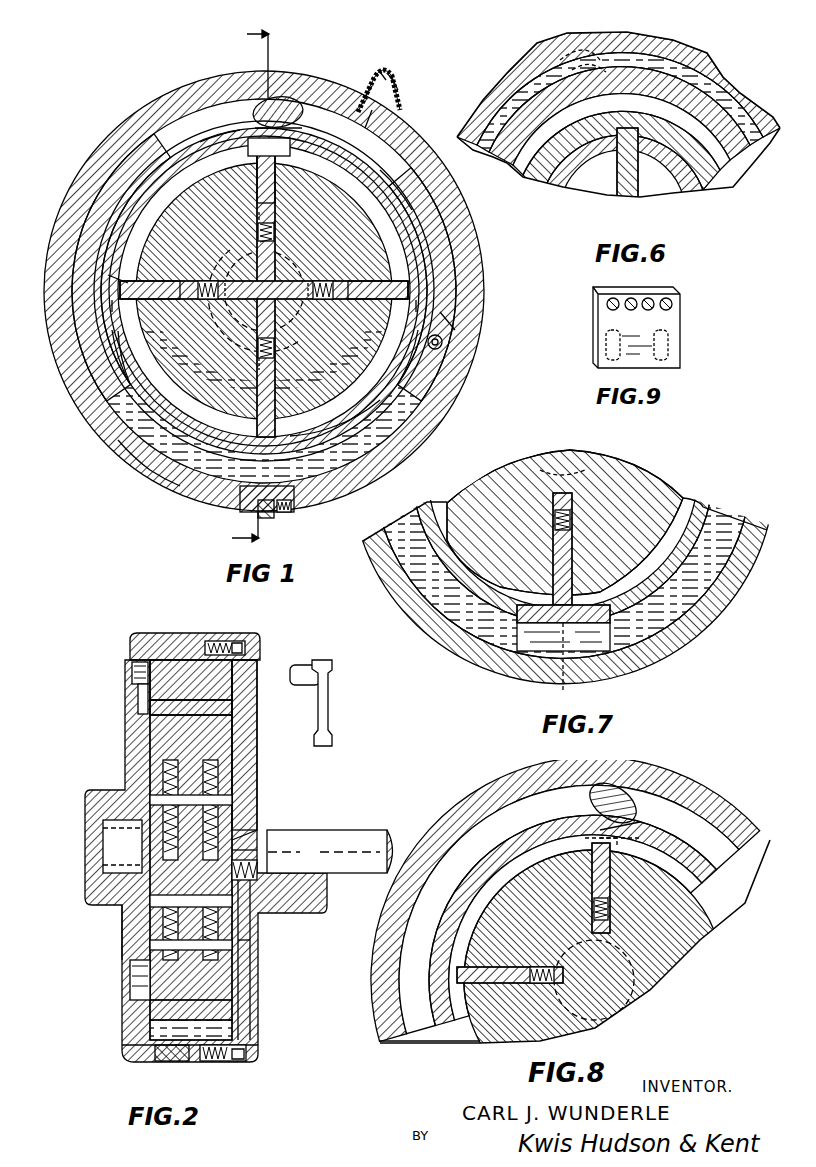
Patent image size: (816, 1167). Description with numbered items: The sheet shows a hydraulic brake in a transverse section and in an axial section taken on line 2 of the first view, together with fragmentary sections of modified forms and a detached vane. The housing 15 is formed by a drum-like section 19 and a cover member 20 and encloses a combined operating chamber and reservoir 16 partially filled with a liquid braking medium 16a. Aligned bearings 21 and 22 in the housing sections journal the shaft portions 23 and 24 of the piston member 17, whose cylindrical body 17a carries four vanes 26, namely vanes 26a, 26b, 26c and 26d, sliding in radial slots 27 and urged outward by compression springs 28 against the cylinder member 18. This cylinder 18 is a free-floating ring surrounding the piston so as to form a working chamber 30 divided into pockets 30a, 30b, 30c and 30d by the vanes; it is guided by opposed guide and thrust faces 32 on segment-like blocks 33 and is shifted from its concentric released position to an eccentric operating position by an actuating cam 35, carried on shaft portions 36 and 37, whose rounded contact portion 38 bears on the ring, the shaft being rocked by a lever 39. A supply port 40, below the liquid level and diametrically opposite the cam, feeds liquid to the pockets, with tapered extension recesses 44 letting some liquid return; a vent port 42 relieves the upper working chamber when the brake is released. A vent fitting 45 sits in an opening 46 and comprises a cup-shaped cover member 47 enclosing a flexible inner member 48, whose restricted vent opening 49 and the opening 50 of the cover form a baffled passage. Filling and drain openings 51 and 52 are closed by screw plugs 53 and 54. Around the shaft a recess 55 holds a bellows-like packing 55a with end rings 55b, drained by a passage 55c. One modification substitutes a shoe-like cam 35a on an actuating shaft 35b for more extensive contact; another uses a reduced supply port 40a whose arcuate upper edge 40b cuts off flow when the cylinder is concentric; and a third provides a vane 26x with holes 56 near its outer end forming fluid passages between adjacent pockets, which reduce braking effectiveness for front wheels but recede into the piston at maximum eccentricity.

In FIG. 1, the section line 2— 2 is at (245, 292).
In FIG. 1, the housing 15 is at (138, 114).
In FIG. 2, the housing 15 is at (214, 632).
In FIG. 7, the housing 15 is at (722, 612).
In FIG. 8, the housing 15 is at (718, 792).
In FIG. 1, the combined operating chamber and reservoir 16 is at (206, 100).
In FIG. 8, the combined operating chamber and reservoir 16 is at (470, 842).
In FIG. 1, the hydraulic braking medium 16a is at (130, 464).
In FIG. 2, the hydraulic braking medium 16a is at (126, 1046).
In FIG. 7, the hydraulic braking medium 16a is at (474, 664).
In FIG. 8, the hydraulic braking medium 16a is at (422, 1036).
In FIG. 1, the piston member 17 is at (140, 176).
In FIG. 6, the piston member 17 is at (676, 197).
In FIG. 7, the piston member 17 is at (642, 504).
In FIG. 8, the piston member 17 is at (492, 920).
In FIG. 1, the cylindrical body 17a is at (108, 235).
In FIG. 1, the cylinder member 18 is at (150, 166).
In FIG. 2, the cylinder member 18 is at (150, 706).
In FIG. 6, the cylinder member 18 is at (736, 180).
In FIG. 7, the cylinder member 18 is at (712, 520).
In FIG. 8, the cylinder member 18 is at (540, 842).
In FIG. 2, the drum-like housing section 19 is at (140, 735).
In FIG. 2, the cover member 20 is at (257, 732).
In FIG. 2, the bearing 21 is at (122, 902).
In FIG. 2, the bearing 22 is at (330, 832).
In FIG. 2, the shaft portion 23 is at (100, 866).
In FIG. 2, the shaft portion 24 is at (382, 830).
In FIG. 1, the vanes 26 is at (264, 290).
In FIG. 2, the vanes 26 is at (160, 750).
In FIG. 6, the vanes 26 is at (616, 150).
In FIG. 1, the vane 26a is at (118, 314).
In FIG. 1, the vane 26b is at (242, 500).
In FIG. 1, the vane 26c is at (446, 256).
In FIG. 1, the vane 26d is at (300, 128).
In FIG. 9, the vane with holes 26x is at (682, 302).
In FIG. 8, the vane with holes 26x is at (640, 876).
In FIG. 1, the radial slots 27 is at (404, 426).
In FIG. 2, the radial slots 27 is at (160, 955).
In FIG. 9, the radial slots 27 is at (684, 346).
In FIG. 7, the radial slots 27 is at (622, 500).
In FIG. 8, the radial slots 27 is at (490, 1042).
In FIG. 1, the compression springs 28 is at (286, 182).
In FIG. 2, the compression springs 28 is at (220, 950).
In FIG. 7, the compression springs 28 is at (546, 500).
In FIG. 8, the compression springs 28 is at (640, 992).
In FIG. 1, the working chamber 30 is at (410, 152).
In FIG. 6, the working chamber 30 is at (620, 109).
In FIG. 7, the working chamber 30 is at (690, 506).
In FIG. 1, the pocket 30a is at (88, 374).
In FIG. 1, the pocket 30b is at (432, 372).
In FIG. 1, the pocket 30c is at (440, 216).
In FIG. 1, the pocket 30d is at (246, 150).
In FIG. 1, the guide and thrust faces 32 is at (126, 206).
In FIG. 1, the segment-like blocks 33 is at (62, 270).
In FIG. 1, the actuating cam 35 is at (302, 96).
In FIG. 2, the actuating cam 35 is at (216, 646).
In FIG. 8, the actuating cam 35 is at (658, 792).
In FIG. 6, the shoe-like cam 35a is at (722, 72).
In FIG. 6, the actuating shaft 35b is at (575, 62).
In FIG. 2, the shaft portion 36 is at (132, 672).
In FIG. 2, the shaft portion 37 is at (306, 666).
In FIG. 1, the rounded contact portion 38 is at (292, 116).
In FIG. 8, the rounded contact portion 38 is at (636, 816).
In FIG. 2, the lever 39 is at (330, 706).
In FIG. 1, the supply port 40 is at (350, 488).
In FIG. 2, the supply port 40 is at (140, 986).
In FIG. 7, the supply port of reduced size 40a is at (626, 652).
In FIG. 7, the upper edge of port 40b is at (586, 672).
In FIG. 1, the vent port 42 is at (258, 126).
In FIG. 2, the vent port 42 is at (138, 692).
In FIG. 1, the extension recesses 44 is at (162, 482).
In FIG. 1, the vent fitting 45 is at (402, 90).
In FIG. 1, the opening 46 is at (368, 114).
In FIG. 1, the cup-shaped cover member 47 is at (400, 96).
In FIG. 1, the flexible inner member 48 is at (386, 74).
In FIG. 1, the restricted vent opening 49 is at (394, 80).
In FIG. 1, the opening of outer member 50 is at (370, 88).
In FIG. 1, the filling opening 51 is at (456, 322).
In FIG. 1, the drain opening 52 is at (290, 508).
In FIG. 2, the drain opening 52 is at (216, 1062).
In FIG. 1, the screw plug 53 is at (444, 342).
In FIG. 1, the screw plug 54 is at (270, 520).
In FIG. 2, the screw plug 54 is at (162, 1062).
In FIG. 2, the recess 55 is at (258, 926).
In FIG. 2, the packing 55a is at (252, 850).
In FIG. 2, the end rings 55b is at (246, 832).
In FIG. 2, the drain passage 55c is at (256, 976).
In FIG. 9, the holes 56 is at (608, 306).
In FIG. 8, the holes 56 is at (583, 850).